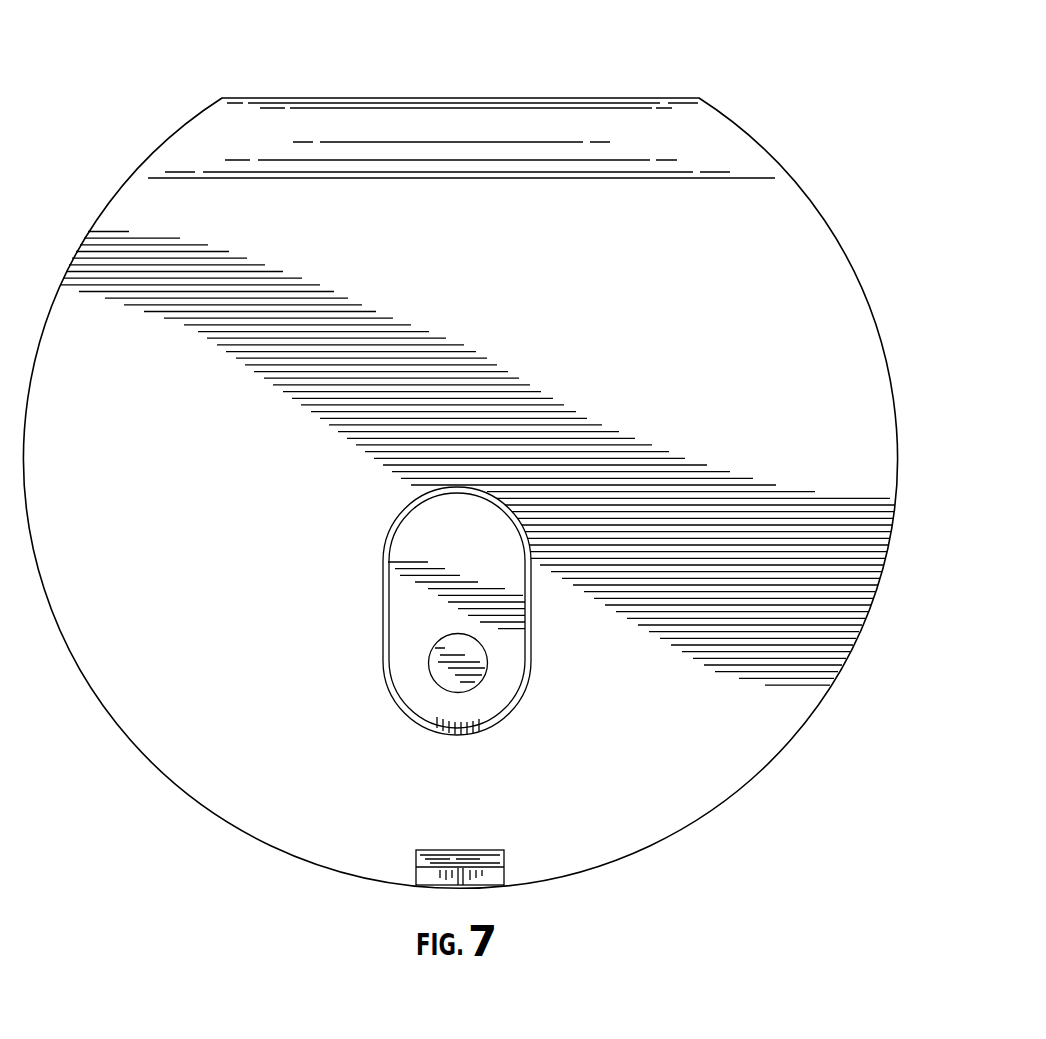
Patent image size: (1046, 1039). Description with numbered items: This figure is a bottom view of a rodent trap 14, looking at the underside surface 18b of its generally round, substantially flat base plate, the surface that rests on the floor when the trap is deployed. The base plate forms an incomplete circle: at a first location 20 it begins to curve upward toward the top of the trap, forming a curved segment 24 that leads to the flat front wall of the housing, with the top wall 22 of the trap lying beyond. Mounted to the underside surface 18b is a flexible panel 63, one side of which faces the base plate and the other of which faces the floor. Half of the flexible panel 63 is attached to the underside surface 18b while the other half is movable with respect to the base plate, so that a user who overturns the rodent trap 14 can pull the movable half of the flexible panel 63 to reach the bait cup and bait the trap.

The rodent trap 14 is at (124, 94).
The top wall 22 is at (630, 97).
The curved segment 24 is at (500, 118).
The first location 20 is at (700, 178).
The underside surface 18b is at (700, 309).
The flexible panel 63 is at (467, 541).